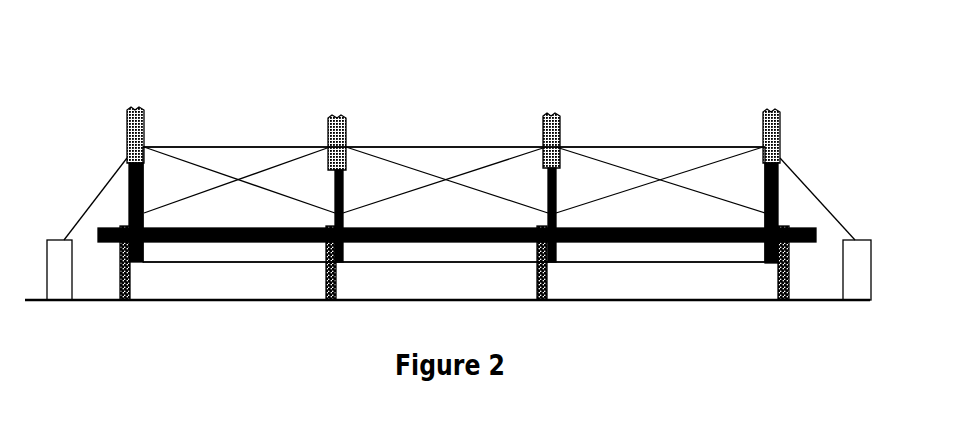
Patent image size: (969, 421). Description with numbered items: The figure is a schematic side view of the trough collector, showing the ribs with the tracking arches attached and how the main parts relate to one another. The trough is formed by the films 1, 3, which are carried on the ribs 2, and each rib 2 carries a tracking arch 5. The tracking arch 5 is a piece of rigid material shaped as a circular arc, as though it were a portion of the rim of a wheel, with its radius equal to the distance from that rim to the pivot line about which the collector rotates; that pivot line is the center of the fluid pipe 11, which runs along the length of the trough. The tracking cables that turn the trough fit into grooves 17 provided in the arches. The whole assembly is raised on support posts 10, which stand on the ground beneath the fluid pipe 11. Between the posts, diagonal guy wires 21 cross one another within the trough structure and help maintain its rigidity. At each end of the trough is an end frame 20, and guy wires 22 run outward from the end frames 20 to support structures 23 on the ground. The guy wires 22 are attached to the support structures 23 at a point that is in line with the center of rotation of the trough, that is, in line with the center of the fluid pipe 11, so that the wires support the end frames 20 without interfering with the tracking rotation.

The film 1 is at (180, 146).
The film 3 is at (454, 204).
The diagonal guy wire 21 is at (266, 175).
The fluid pipe 11 is at (112, 226).
The support post 10 is at (132, 279).
The end frame 20 is at (128, 200).
The tracking arch 5 is at (346, 136).
The rib 2 is at (344, 196).
The groove 17 is at (547, 112).
The guy wire 22 is at (812, 188).
The support structure 23 is at (858, 240).